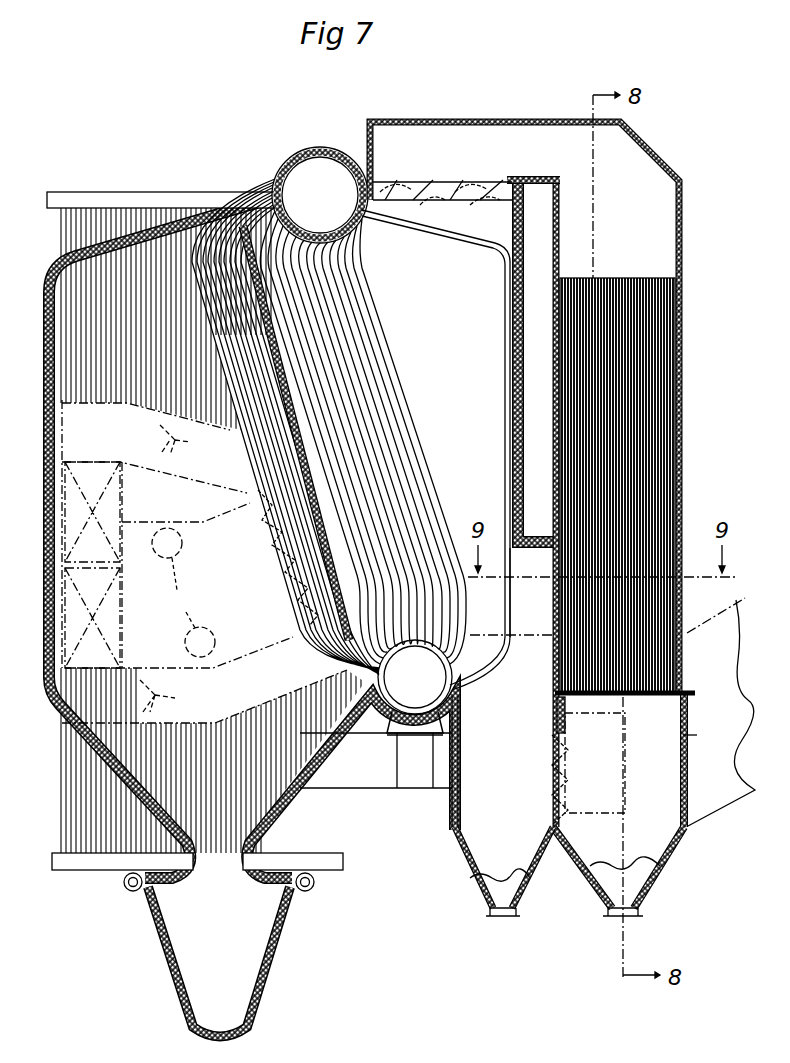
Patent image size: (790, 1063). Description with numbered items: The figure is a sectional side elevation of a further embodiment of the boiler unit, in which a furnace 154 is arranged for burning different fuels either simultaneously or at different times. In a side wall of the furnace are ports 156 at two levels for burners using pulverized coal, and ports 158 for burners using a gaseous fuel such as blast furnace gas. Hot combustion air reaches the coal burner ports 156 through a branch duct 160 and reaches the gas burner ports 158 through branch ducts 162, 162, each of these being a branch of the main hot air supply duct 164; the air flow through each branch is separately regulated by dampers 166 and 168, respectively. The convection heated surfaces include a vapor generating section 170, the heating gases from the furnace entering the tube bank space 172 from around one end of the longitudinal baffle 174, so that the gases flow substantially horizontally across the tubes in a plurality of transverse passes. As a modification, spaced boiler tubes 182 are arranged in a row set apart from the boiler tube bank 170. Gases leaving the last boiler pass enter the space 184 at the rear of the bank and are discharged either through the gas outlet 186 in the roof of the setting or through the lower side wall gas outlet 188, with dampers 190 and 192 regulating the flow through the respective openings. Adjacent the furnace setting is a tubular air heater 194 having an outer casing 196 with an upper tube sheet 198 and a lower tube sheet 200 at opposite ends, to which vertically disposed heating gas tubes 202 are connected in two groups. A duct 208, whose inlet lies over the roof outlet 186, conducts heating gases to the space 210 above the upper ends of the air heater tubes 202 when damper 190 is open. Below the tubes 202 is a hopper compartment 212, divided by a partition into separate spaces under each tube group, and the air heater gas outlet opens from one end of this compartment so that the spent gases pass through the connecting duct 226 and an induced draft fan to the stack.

The furnace 154 is at (170, 509).
The ports 156 is at (183, 592).
The ports 158 is at (92, 595).
The branch duct 160 is at (204, 526).
The branch ducts 162 is at (77, 404).
The main hot air supply duct 164 is at (557, 388).
The damper 166 is at (276, 562).
The dampers 168 is at (182, 568).
The vapor generating section 170 is at (345, 351).
The tube bank space 172 is at (380, 477).
The longitudinal baffle 174 is at (270, 368).
The spaced boiler tubes 182 is at (508, 270).
The space 184 is at (474, 377).
The gas outlet 186 is at (458, 180).
The lower side wall gas outlet 188 is at (548, 754).
The damper 190 is at (420, 180).
The damper 192 is at (550, 804).
The tubular air heater 194 is at (682, 352).
The outer casing 196 is at (683, 478).
The upper tube sheet 198 is at (622, 280).
The lower tube sheet 200 is at (654, 698).
The heating gas tubes 202 is at (683, 428).
The duct 208 is at (458, 120).
The space 210 is at (606, 222).
The hopper compartment 212 is at (690, 777).
The connecting duct 226 is at (708, 815).